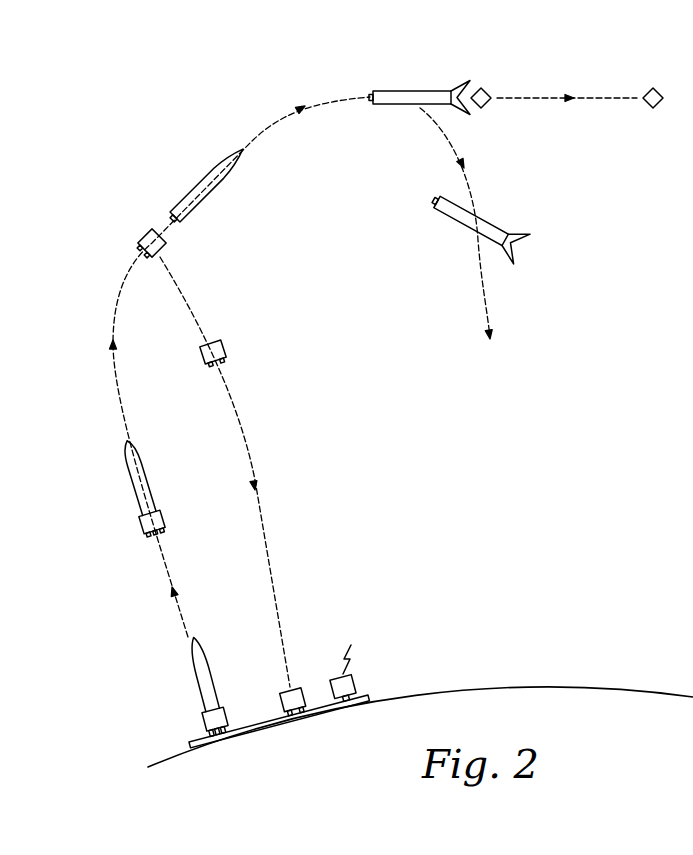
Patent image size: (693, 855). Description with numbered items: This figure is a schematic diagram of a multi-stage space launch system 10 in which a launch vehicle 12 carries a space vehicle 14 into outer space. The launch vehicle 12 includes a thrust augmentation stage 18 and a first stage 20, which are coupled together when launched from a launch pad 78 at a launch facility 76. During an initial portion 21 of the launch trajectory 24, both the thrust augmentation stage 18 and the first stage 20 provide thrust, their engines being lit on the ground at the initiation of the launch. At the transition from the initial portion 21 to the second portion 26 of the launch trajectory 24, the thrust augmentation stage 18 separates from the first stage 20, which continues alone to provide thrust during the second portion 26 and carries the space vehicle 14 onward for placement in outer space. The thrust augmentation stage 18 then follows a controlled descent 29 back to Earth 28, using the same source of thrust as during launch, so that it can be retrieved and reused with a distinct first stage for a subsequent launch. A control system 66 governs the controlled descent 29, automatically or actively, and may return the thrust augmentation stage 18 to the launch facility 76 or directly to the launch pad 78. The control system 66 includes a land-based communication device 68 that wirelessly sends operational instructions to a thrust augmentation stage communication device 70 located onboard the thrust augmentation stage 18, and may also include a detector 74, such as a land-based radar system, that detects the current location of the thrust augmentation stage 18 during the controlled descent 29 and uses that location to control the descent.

The multi-stage space launch system 10 is at (145, 77).
The launch vehicle 12 is at (145, 173).
The space vehicle 14 is at (485, 90).
The thrust augmentation stage 18 is at (142, 233).
The first stage 20 is at (198, 180).
The initial portion of the launch trajectory 21 is at (93, 500).
The launch trajectory 24 is at (203, 67).
The second portion of the launch trajectory 26 is at (287, 87).
The Earth 28 is at (410, 697).
The controlled descent 29 is at (283, 418).
The control system 66 is at (382, 665).
The land-based communication device 68 is at (355, 682).
The thrust augmentation stage communication device 70 is at (203, 355).
The detector 74 is at (340, 678).
The launch facility 76 is at (148, 713).
The launch pad 78 is at (193, 740).